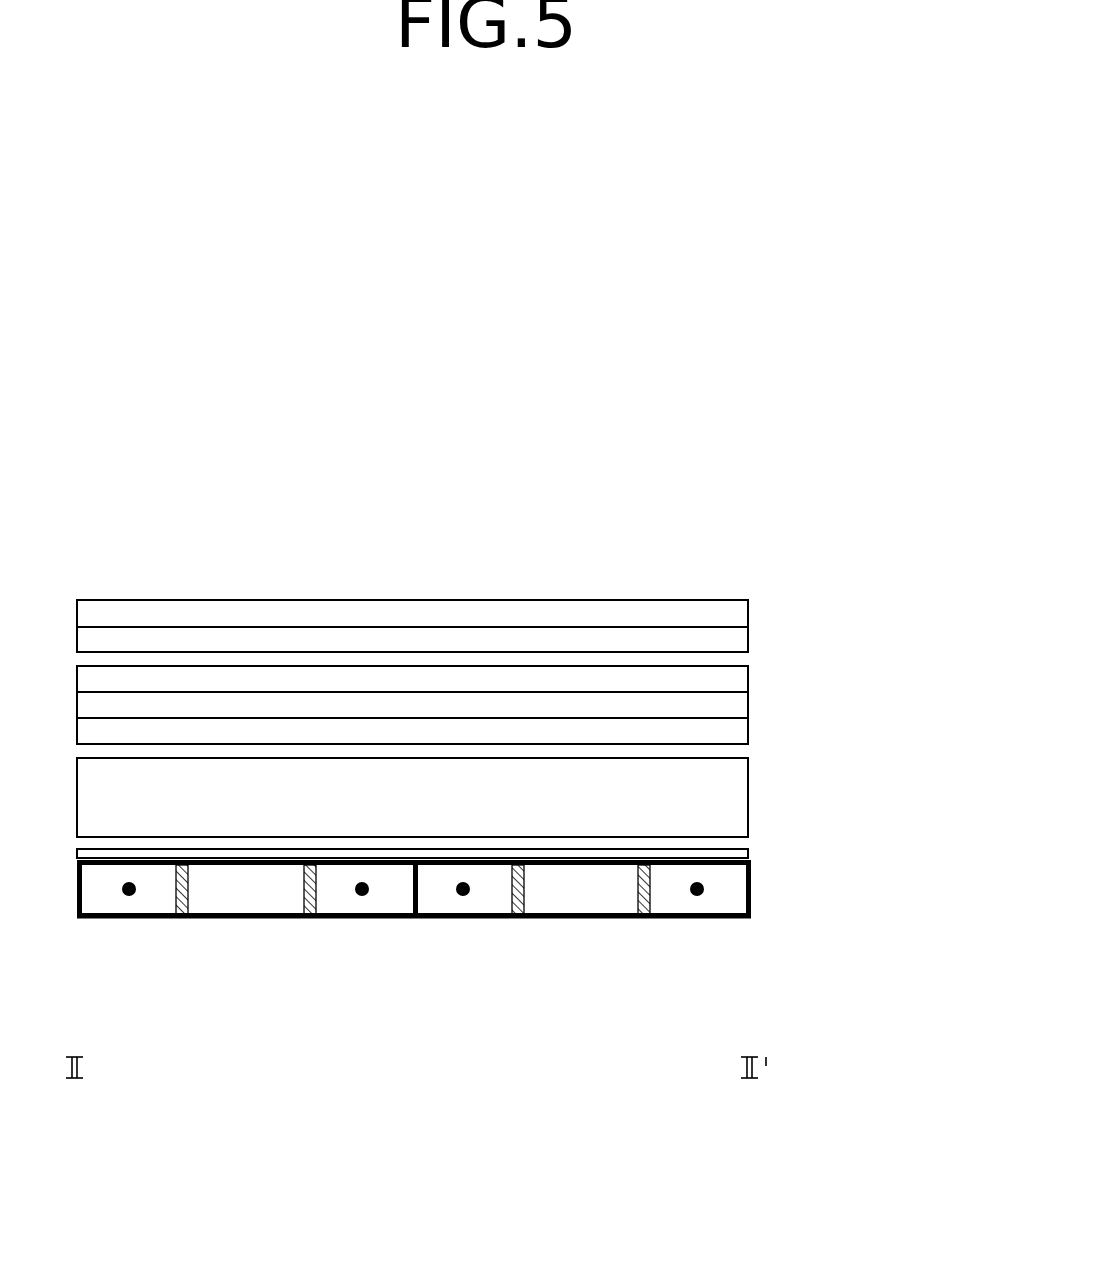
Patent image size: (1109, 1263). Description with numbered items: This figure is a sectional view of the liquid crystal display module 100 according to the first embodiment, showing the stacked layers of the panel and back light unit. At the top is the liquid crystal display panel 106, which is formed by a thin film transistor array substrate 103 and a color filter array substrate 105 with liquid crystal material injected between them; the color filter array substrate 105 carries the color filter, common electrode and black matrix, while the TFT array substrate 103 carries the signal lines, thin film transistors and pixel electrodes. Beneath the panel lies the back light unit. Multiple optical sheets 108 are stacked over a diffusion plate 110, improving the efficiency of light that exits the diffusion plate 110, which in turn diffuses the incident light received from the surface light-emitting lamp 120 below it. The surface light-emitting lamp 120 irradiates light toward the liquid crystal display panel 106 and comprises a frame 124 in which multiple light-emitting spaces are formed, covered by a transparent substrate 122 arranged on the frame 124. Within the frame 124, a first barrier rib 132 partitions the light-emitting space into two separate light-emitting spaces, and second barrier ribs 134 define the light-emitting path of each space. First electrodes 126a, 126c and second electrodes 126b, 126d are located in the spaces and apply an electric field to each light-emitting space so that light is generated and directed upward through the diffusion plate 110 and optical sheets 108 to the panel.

The liquid crystal display module 100 is at (849, 566).
The liquid crystal display panel 106 is at (857, 601).
The color filter array substrate 105 is at (750, 613).
The thin film transistor array substrate 103 is at (750, 641).
The optical sheets 108 is at (748, 680).
The diffusion plate 110 is at (750, 802).
The transparent substrate 122 is at (735, 853).
The surface light-emitting lamp 120 is at (818, 889).
The frame 124 is at (752, 905).
The first barrier rib 132 is at (428, 918).
The second barrier rib 134 is at (312, 918).
The first electrode 126a is at (134, 892).
The second electrode 126b is at (366, 892).
The first electrode 126c is at (467, 892).
The second electrode 126d is at (701, 892).